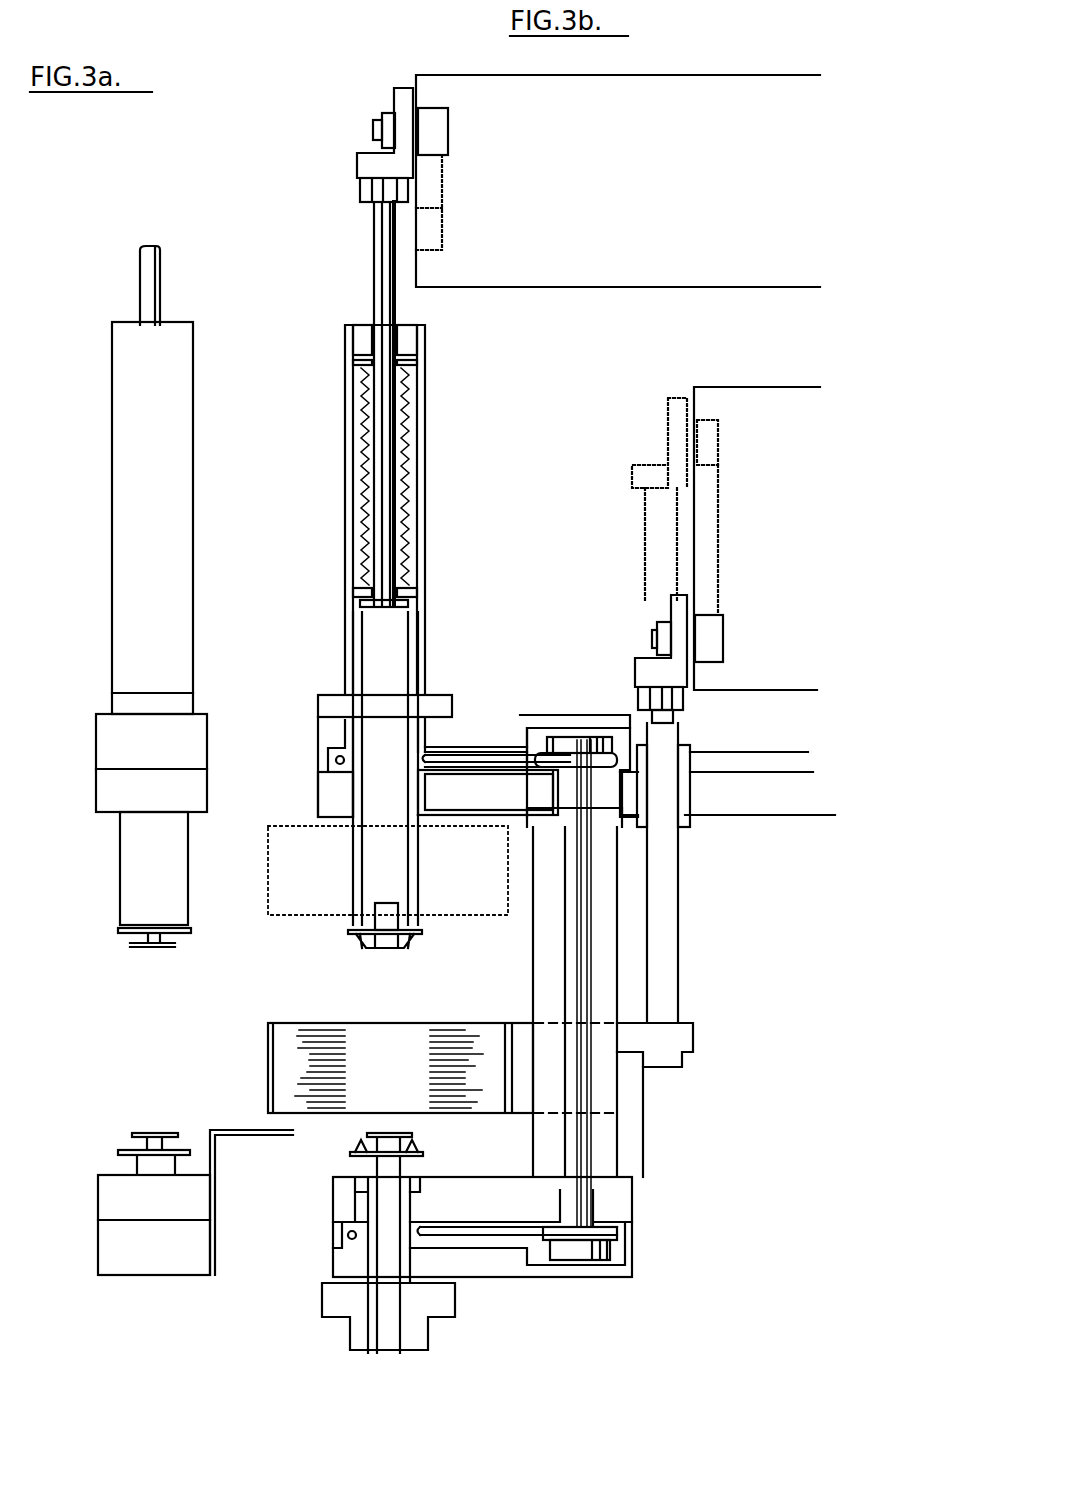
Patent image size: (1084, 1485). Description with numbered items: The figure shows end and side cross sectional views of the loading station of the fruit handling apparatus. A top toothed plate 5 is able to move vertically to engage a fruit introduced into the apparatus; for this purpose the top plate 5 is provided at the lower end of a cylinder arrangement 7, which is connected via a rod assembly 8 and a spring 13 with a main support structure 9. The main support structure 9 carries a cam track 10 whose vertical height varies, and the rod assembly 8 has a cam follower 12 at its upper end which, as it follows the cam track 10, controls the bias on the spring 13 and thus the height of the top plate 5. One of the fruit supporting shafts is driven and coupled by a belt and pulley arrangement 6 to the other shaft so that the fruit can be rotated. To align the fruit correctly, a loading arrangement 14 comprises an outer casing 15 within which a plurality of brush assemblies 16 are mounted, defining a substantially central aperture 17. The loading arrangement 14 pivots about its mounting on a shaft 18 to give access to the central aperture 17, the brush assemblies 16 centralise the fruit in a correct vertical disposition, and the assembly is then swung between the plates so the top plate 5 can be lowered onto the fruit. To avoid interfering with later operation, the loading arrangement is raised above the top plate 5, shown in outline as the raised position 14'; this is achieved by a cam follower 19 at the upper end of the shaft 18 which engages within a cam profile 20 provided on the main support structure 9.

In FIG. 3A, the top toothed plate 5 is at (192, 931).
In FIG. 3B, the top toothed plate 5 is at (425, 936).
In FIG. 3B, the belt and pulley arrangement 6 is at (553, 760).
In FIG. 3A, the cylinder arrangement 7 is at (204, 702).
In FIG. 3B, the cylinder arrangement 7 is at (440, 668).
In FIG. 3A, the rod assembly 8 is at (165, 300).
In FIG. 3B, the rod assembly 8 is at (395, 570).
In FIG. 3B, the main support structure 9 is at (677, 192).
In FIG. 3B, the cam track 10 is at (448, 121).
In FIG. 3B, the cam follower 12 is at (438, 140).
In FIG. 3B, the spring 13 is at (408, 427).
In FIG. 3B, the loading arrangement 14 is at (468, 1045).
In FIG. 3B, the loading assembly in raised position 14' is at (388, 895).
In FIG. 3B, the outer casing 15 is at (268, 1058).
In FIG. 3B, the brush assemblies 16 is at (325, 1050).
In FIG. 3B, the central aperture 17 is at (398, 1089).
In FIG. 3B, the shaft 18 is at (670, 1000).
In FIG. 3B, the cam follower 19 is at (710, 642).
In FIG. 3B, the cam profile 20 is at (725, 625).